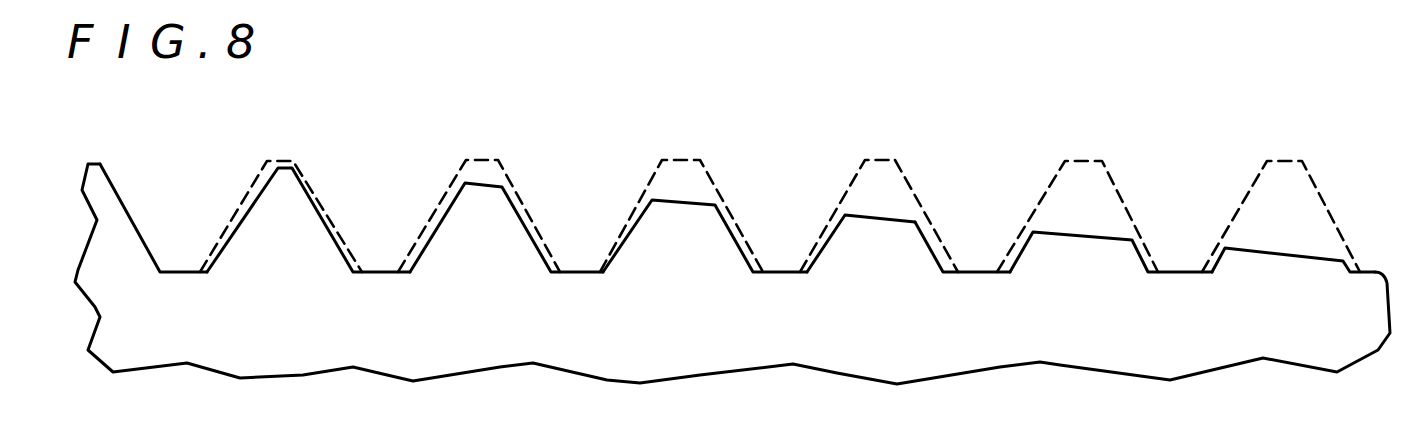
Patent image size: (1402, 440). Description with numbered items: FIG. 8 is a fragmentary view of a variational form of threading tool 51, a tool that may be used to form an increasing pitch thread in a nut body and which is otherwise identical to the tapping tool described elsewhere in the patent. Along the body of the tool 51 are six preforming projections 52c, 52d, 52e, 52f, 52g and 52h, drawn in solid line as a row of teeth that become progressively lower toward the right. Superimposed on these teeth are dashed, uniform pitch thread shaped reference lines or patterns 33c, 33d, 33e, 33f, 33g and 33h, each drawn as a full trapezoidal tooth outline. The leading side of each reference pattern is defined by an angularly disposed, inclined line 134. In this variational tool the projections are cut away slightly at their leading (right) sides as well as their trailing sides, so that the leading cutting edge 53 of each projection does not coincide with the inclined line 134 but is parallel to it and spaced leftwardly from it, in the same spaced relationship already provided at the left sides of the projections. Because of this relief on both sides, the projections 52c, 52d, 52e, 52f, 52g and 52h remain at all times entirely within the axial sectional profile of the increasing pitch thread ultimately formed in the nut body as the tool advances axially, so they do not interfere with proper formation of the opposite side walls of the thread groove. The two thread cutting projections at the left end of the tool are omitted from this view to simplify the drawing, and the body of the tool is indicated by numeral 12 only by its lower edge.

The cutting blade 12 is at (1013, 439).
The threading tool 51 is at (633, 357).
The preforming projection 52c is at (273, 233).
The preforming projection 52d is at (472, 237).
The preforming projection 52e is at (675, 227).
The preforming projection 52f is at (878, 238).
The preforming projection 52g is at (1075, 250).
The preforming projection 52h is at (1273, 260).
The leading cutting edge 53 is at (933, 240).
The angularly disposed line 134 is at (913, 188).
The reference pattern 33c is at (293, 160).
The reference pattern 33d is at (503, 157).
The reference pattern 33e is at (700, 160).
The reference pattern 33f is at (877, 160).
The reference pattern 33g is at (1083, 162).
The reference pattern 33h is at (1283, 160).